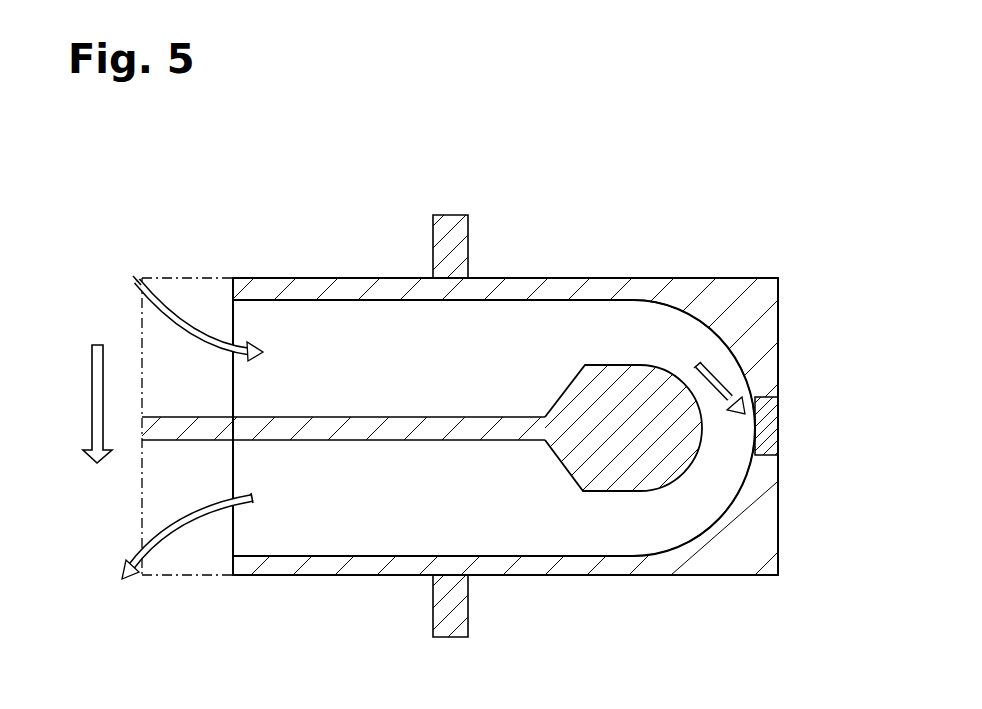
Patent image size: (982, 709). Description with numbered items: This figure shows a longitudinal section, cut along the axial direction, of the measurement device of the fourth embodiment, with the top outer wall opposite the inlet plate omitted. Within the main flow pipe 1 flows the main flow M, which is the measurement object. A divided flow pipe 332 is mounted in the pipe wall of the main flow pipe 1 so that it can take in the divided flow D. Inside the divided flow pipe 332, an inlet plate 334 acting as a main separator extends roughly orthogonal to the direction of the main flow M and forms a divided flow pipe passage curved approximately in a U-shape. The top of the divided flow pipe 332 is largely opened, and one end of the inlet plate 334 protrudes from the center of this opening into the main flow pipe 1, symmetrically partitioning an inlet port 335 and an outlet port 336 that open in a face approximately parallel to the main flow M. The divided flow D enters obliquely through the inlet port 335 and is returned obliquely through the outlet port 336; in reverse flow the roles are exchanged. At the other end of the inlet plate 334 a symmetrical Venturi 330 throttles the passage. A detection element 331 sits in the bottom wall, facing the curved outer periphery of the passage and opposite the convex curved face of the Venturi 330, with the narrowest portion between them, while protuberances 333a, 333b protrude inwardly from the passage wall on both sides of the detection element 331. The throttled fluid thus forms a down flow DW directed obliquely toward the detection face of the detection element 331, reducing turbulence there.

The main flow pipe 1 is at (468, 621).
The Venturi 330 is at (584, 484).
The detection element 331 is at (772, 425).
The divided flow pipe 332 is at (516, 255).
The protuberance 333a is at (743, 360).
The protuberance 333b is at (743, 493).
The inlet plate 334 is at (363, 415).
The inlet port 335 is at (233, 317).
The outlet port 336 is at (233, 530).
The divided flow D is at (130, 280).
The main flow M is at (92, 397).
The down flow DW is at (700, 362).